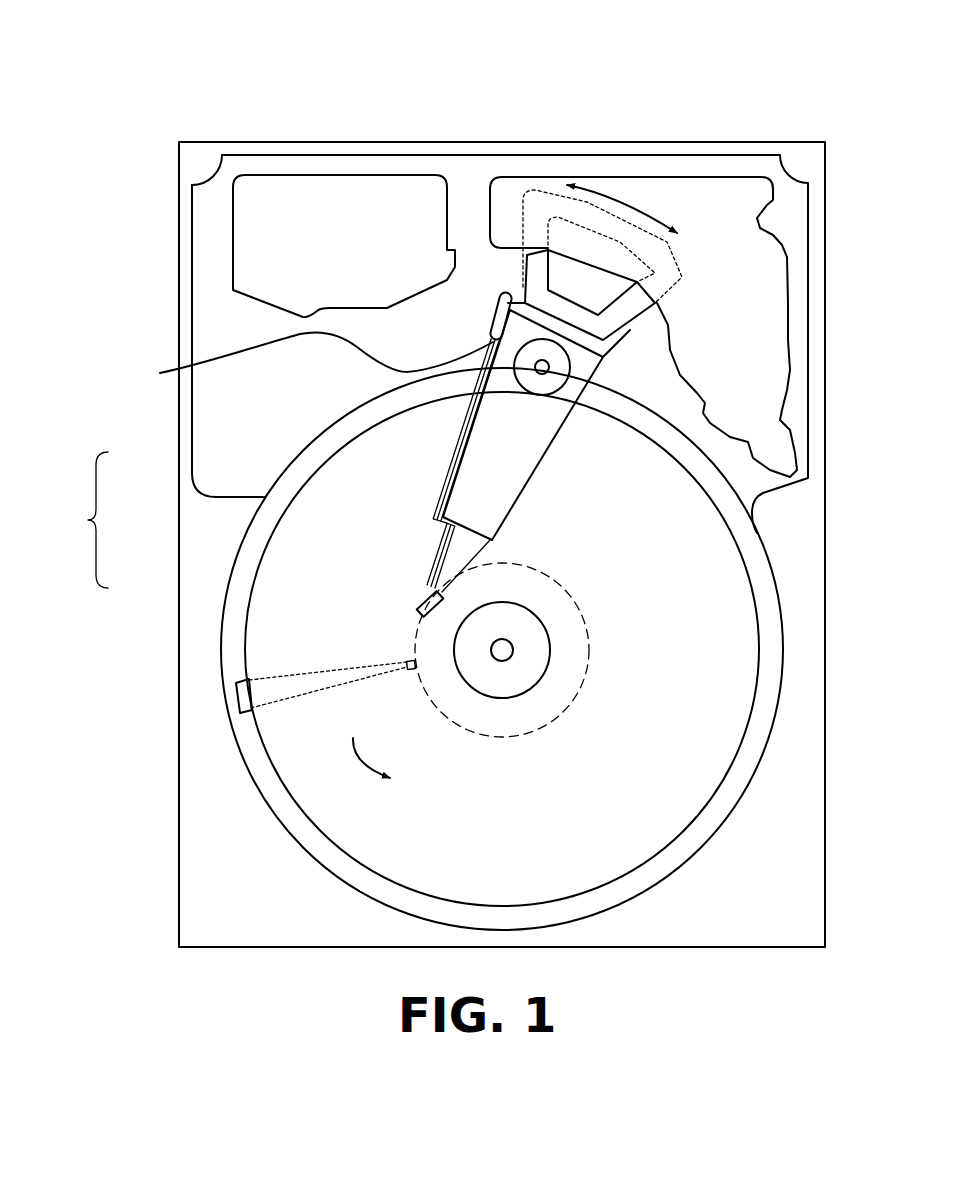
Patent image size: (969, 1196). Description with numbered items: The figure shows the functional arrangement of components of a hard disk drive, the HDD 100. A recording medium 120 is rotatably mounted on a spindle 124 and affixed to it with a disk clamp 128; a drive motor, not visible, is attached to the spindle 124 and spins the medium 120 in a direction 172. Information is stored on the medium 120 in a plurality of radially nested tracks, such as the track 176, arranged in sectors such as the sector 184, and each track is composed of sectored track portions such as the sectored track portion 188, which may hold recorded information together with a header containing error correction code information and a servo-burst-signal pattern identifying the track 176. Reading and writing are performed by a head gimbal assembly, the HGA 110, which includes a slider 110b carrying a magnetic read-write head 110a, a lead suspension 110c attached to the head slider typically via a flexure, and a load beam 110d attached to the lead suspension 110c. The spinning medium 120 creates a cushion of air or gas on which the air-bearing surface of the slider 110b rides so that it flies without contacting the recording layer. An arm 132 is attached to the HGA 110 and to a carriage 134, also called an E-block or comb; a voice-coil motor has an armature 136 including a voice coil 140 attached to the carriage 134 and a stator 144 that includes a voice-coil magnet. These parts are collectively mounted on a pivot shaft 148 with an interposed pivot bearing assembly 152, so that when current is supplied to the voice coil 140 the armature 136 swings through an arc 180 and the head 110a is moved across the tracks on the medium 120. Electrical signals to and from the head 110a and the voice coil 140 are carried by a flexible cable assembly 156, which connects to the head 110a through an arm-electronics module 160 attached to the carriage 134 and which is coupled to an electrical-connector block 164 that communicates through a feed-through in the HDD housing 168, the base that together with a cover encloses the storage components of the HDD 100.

The HDD 100 is at (128, 50).
The head gimbal assembly 110 is at (80, 520).
The magnetic read-write head 110a is at (420, 620).
The slider 110b is at (430, 597).
The lead suspension 110c is at (435, 557).
The load beam 110d is at (437, 520).
The recording medium 120 is at (690, 602).
The spindle 124 is at (510, 648).
The disk clamp 128 is at (512, 677).
The arm 132 is at (493, 483).
The carriage 134 is at (562, 398).
The armature 136 is at (520, 257).
The voice coil 140 is at (536, 257).
The stator 144 is at (750, 272).
The pivot shaft 148 is at (548, 366).
The pivot bearing assembly 152 is at (558, 385).
The flexible cable assembly 156 is at (308, 360).
The arm-electronics module 160 is at (495, 334).
The electrical-connector block 164 is at (252, 250).
The HDD housing 168 is at (815, 147).
The direction 172 is at (393, 775).
The track 176 is at (563, 590).
The arc 180 is at (622, 195).
The sector 184 is at (235, 703).
The sectored track portion 188 is at (403, 663).